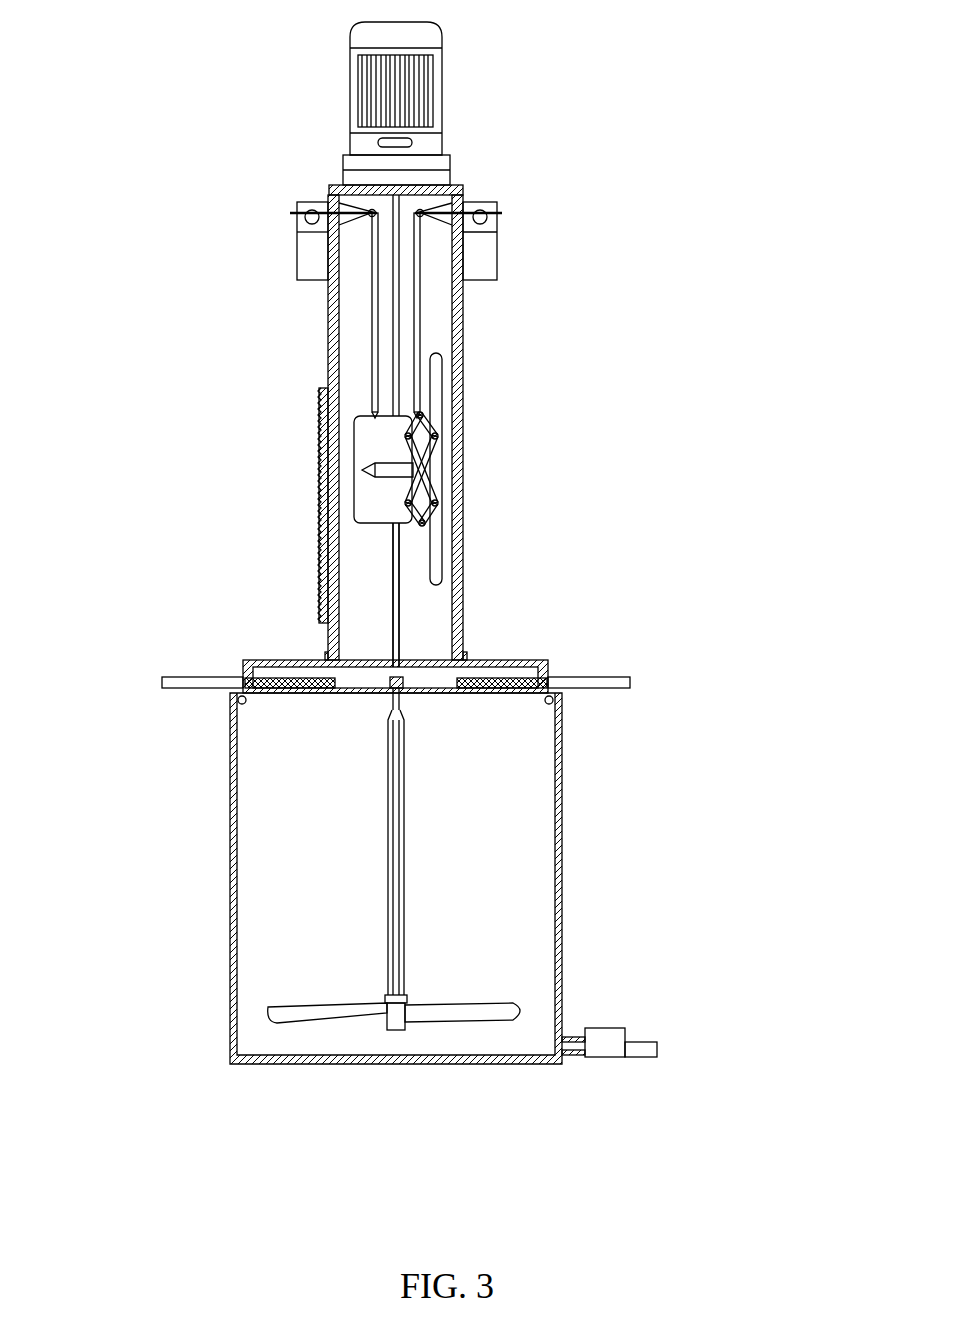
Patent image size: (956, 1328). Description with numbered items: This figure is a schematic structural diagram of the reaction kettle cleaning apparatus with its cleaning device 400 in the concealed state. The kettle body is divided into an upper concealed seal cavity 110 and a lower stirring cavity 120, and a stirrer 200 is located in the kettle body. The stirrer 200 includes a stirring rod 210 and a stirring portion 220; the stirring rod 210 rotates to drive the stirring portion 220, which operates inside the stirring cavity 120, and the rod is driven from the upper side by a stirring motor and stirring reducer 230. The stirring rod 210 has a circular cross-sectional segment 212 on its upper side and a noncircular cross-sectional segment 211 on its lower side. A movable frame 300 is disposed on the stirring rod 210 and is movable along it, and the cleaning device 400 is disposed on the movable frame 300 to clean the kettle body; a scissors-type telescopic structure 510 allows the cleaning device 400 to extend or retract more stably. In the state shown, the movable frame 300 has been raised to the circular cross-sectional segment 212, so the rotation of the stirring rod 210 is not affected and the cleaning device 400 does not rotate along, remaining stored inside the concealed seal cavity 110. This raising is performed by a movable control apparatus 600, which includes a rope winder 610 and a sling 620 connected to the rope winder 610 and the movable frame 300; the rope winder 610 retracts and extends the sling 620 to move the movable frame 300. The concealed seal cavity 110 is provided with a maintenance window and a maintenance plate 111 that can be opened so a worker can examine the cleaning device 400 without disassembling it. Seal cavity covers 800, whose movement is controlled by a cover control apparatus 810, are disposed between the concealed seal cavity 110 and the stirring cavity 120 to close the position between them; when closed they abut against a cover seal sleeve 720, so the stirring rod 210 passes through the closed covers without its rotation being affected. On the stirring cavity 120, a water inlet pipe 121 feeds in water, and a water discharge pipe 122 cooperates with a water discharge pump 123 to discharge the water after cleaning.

The concealed seal cavity 110 is at (355, 368).
The maintenance plate 111 is at (320, 505).
The stirring cavity 120 is at (315, 908).
The water inlet pipe 121 is at (560, 702).
The water discharge pipe 122 is at (578, 1047).
The water discharge pump 123 is at (610, 1048).
The stirrer 200 is at (395, 1008).
The stirring rod 210 is at (397, 325).
The noncircular cross-sectional segment 211 is at (395, 825).
The circular cross-sectional segment 212 is at (397, 603).
The stirring portion 220 is at (323, 1013).
The stirring reducer 230 is at (417, 103).
The movable frame 300 is at (375, 440).
The cleaning device 400 is at (437, 403).
The scissors-type telescopic structure 510 is at (418, 497).
The movable control apparatus 600 is at (145, 268).
The rope winder 610 is at (300, 213).
The sling 620 is at (375, 323).
The cover seal sleeve 720 is at (385, 682).
The seal cavity covers 800 is at (515, 663).
The cover control apparatus 810 is at (207, 688).